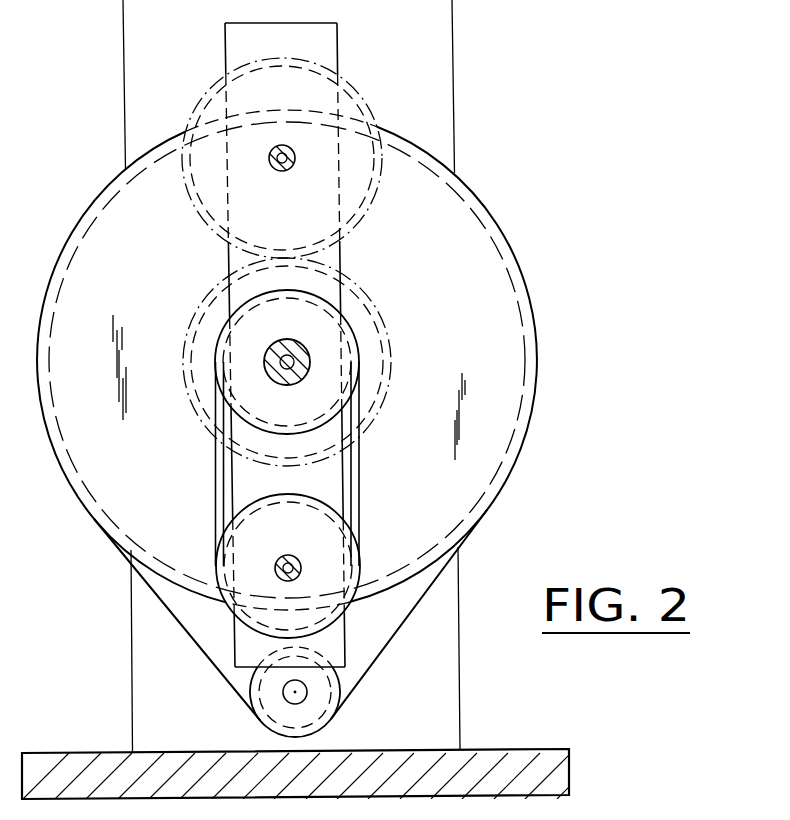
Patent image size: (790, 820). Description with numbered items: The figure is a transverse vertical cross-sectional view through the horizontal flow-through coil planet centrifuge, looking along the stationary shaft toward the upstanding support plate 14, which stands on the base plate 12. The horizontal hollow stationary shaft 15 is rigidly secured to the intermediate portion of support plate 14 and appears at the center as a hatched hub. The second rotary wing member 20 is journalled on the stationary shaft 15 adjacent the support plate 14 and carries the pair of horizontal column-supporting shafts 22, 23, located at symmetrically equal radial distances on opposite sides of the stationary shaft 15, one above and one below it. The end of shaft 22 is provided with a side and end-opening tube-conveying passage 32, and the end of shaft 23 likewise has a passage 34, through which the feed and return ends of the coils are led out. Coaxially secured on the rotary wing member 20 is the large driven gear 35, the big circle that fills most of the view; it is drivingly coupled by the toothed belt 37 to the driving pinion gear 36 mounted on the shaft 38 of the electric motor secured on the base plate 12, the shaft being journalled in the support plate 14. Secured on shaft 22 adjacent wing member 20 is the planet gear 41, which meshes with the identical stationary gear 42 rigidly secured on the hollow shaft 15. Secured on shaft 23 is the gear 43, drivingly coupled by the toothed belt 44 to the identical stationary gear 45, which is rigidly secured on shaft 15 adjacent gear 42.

The base plate 12 is at (513, 757).
The support plate 14 is at (440, 60).
The horizontal hollow stationary shaft 15 is at (294, 348).
The second rotary wing member 20 is at (335, 40).
The column-supporting shaft 22 is at (289, 172).
The column-supporting shaft 23 is at (286, 562).
The tube-conveying passage 32 is at (289, 150).
The tube-conveying passage 34 is at (294, 574).
The large driven gear 35 is at (480, 231).
The driving pinion gear 36 is at (327, 710).
The toothed belt 37 is at (390, 637).
The motor shaft 38 is at (286, 697).
The planet gear 41 is at (220, 98).
The stationary gear 42 is at (375, 353).
The gear 43 is at (340, 540).
The toothed belt 44 is at (360, 478).
The stationary gear 45 is at (243, 327).